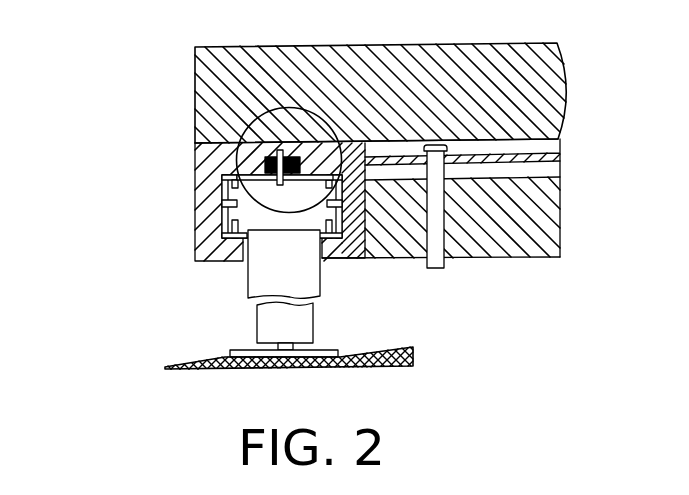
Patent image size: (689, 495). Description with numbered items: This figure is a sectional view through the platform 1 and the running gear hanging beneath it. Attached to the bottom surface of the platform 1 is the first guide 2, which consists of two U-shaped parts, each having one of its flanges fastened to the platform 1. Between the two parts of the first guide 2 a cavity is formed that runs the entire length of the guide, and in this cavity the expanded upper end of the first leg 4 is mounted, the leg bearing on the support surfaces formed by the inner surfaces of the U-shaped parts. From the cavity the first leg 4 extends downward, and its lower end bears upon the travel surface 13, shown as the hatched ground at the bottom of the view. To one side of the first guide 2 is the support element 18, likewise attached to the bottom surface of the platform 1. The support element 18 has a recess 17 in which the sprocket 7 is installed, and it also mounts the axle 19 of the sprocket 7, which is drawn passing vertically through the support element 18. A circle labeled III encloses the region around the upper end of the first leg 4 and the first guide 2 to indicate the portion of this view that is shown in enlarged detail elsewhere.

The platform 1 is at (408, 85).
The first guide 2 is at (256, 239).
The first leg 4 is at (231, 293).
The sprocket 7 is at (434, 160).
The travel surface 13 is at (327, 327).
The recess 17 is at (422, 168).
The support element 18 is at (487, 217).
The axle 19 is at (537, 237).
The detail area III is at (93, 83).